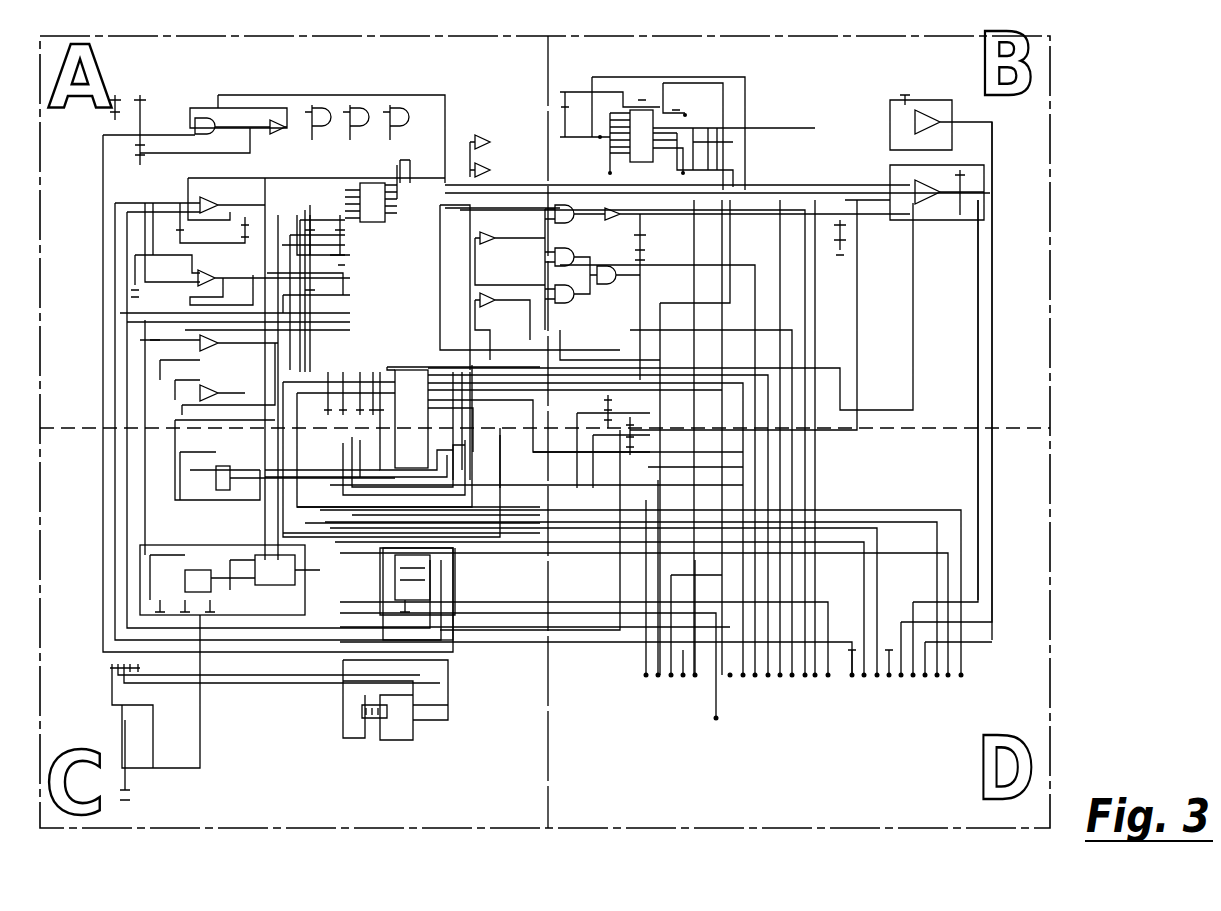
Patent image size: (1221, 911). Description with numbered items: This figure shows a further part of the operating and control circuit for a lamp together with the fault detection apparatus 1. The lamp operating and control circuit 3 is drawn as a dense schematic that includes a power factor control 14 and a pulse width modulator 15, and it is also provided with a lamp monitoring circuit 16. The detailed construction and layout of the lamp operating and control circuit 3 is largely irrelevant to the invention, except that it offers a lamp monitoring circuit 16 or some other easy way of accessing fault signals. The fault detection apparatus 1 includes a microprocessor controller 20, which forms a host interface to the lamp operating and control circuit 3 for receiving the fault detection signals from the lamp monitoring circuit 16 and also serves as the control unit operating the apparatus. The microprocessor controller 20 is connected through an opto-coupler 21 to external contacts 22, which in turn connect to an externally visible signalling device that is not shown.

The fault detection apparatus 1 is at (98, 514).
The lamp operating and control circuit 3 is at (546, 22).
The power factor control 14 is at (747, 88).
The pulse width modulator 15 is at (380, 167).
The lamp monitoring circuit 16 is at (150, 390).
The microprocessor controller 20 is at (413, 385).
The opto-coupler 21 is at (458, 709).
The external contacts 22 is at (112, 672).